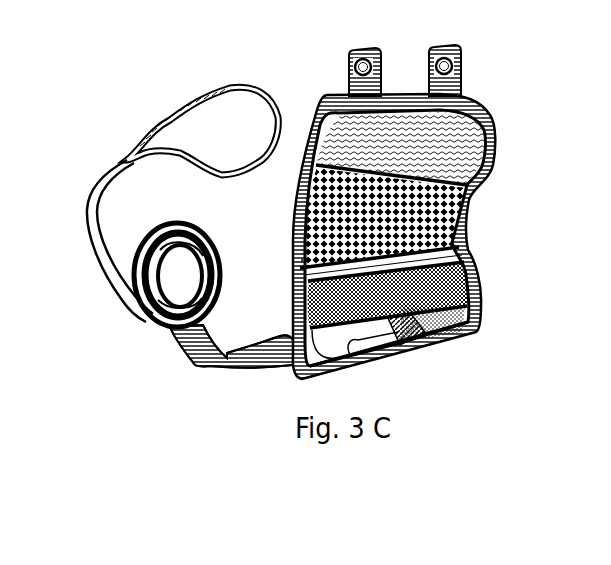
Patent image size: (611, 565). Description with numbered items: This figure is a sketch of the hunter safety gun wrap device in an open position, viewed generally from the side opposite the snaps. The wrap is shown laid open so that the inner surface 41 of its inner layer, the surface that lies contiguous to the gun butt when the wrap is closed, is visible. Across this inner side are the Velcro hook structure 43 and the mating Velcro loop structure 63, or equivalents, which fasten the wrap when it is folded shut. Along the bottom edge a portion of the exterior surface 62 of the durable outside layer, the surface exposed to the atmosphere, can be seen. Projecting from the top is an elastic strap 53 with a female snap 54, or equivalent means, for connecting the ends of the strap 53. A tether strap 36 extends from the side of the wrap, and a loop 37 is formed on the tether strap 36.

The tether strap 36 is at (127, 305).
The loop 37 is at (170, 108).
The inner surface 41 is at (430, 215).
The Velcro hook structure 43 is at (435, 153).
The elastic strap 53 is at (447, 88).
The female snap 54 is at (460, 50).
The exterior surface 62 is at (453, 333).
The Velcro loop structure 63 is at (435, 282).